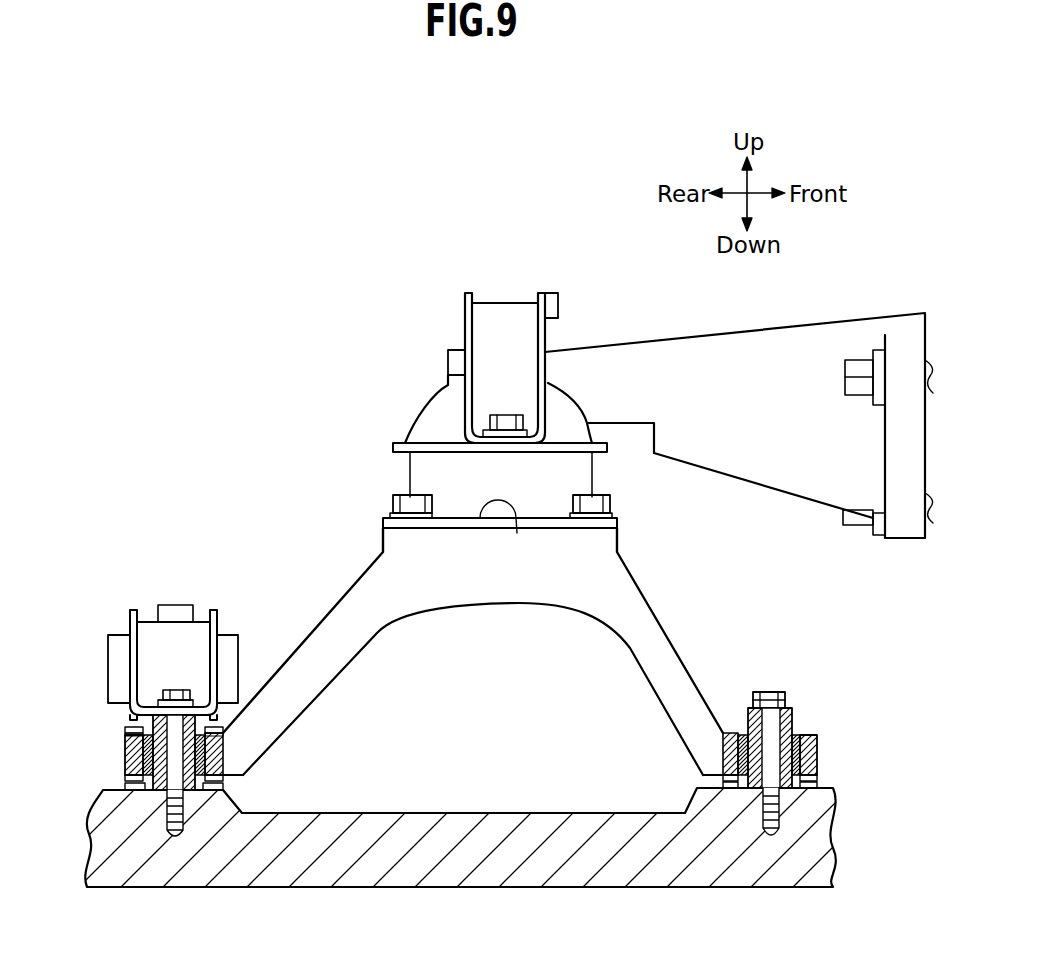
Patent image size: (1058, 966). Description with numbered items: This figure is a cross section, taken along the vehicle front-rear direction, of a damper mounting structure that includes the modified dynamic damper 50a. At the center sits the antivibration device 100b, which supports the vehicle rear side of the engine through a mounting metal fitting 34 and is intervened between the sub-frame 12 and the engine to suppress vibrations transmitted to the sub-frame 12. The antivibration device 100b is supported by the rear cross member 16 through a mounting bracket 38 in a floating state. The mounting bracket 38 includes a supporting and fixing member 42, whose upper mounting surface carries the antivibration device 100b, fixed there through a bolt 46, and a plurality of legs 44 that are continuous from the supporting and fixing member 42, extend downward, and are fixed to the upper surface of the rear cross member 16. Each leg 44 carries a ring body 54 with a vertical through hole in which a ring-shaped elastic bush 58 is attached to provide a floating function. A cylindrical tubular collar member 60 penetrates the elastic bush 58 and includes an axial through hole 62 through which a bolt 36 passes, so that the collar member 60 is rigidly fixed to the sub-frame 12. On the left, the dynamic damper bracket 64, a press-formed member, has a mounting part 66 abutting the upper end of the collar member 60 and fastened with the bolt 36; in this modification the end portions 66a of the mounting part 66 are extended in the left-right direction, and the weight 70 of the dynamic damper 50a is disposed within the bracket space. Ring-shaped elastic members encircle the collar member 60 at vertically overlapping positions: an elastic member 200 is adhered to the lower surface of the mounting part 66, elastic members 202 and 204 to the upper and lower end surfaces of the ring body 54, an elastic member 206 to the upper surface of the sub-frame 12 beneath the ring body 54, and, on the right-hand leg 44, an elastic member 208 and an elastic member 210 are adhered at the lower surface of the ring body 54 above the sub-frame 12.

The sub-frame 12 is at (450, 877).
The rear cross member 16 is at (460, 837).
The mounting metal fitting 34 is at (827, 333).
The bolt 36 is at (175, 690).
The mounting bracket 38 is at (471, 646).
The supporting and fixing member 42 is at (517, 520).
The legs 44 is at (318, 662).
The bolt 46 is at (393, 500).
The dynamic damper 50a is at (161, 638).
The ring body 54 is at (125, 752).
The elastic bush 58 is at (145, 793).
The collar member 60 is at (172, 790).
The through hole 62 is at (200, 790).
The dynamic damper bracket 64 is at (223, 615).
The mounting part 66 is at (106, 660).
The end portion 66a is at (163, 693).
The weight 70 is at (232, 660).
The antivibration device 100b is at (433, 389).
The elastic member 200 is at (128, 712).
The elastic member 202 is at (128, 734).
The elastic member 204 is at (128, 777).
The elastic member 206 is at (128, 787).
The elastic member 208 is at (723, 778).
The elastic member 210 is at (723, 785).